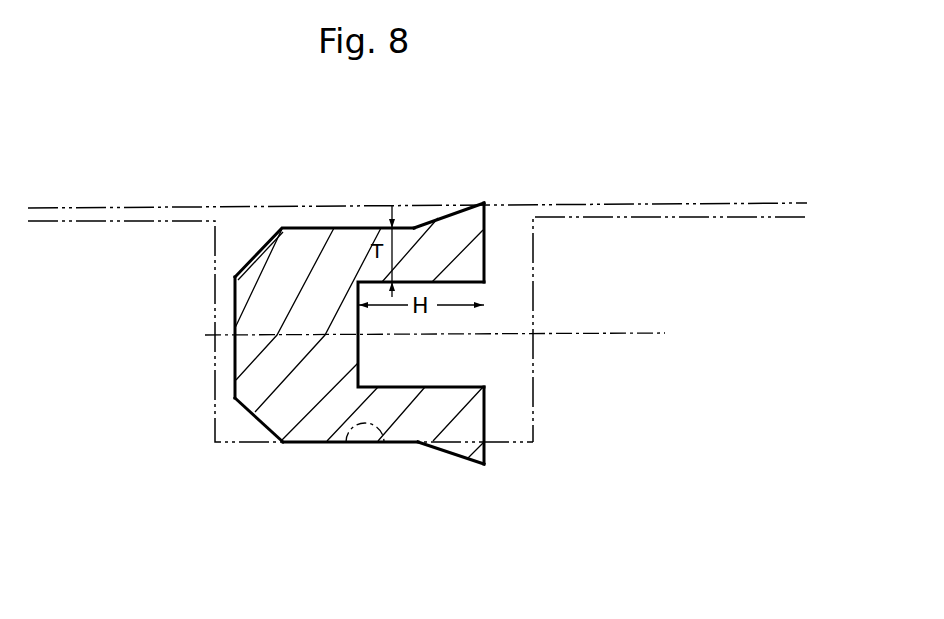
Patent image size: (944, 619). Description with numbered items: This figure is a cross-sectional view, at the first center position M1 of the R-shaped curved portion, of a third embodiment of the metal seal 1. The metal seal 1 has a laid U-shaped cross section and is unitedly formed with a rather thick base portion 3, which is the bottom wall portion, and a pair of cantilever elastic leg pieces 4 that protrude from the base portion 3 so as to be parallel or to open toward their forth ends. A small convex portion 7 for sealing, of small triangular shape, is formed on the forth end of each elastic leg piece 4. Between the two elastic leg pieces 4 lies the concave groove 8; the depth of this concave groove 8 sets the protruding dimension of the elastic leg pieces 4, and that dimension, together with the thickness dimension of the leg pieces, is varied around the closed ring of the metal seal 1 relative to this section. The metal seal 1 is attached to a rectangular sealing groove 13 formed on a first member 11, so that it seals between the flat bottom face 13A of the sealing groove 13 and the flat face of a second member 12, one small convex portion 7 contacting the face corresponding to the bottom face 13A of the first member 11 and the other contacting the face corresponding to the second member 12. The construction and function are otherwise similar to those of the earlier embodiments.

The metal seal 1 is at (348, 226).
The base portion 3 is at (267, 360).
The elastic leg piece 4 is at (438, 240).
The small convex portion 7 is at (470, 212).
The concave groove 8 is at (420, 360).
The first member 11 is at (737, 381).
The second member 12 is at (141, 168).
The sealing groove 13 is at (238, 420).
The bottom face 13A is at (385, 442).
The first center position M1 is at (235, 303).